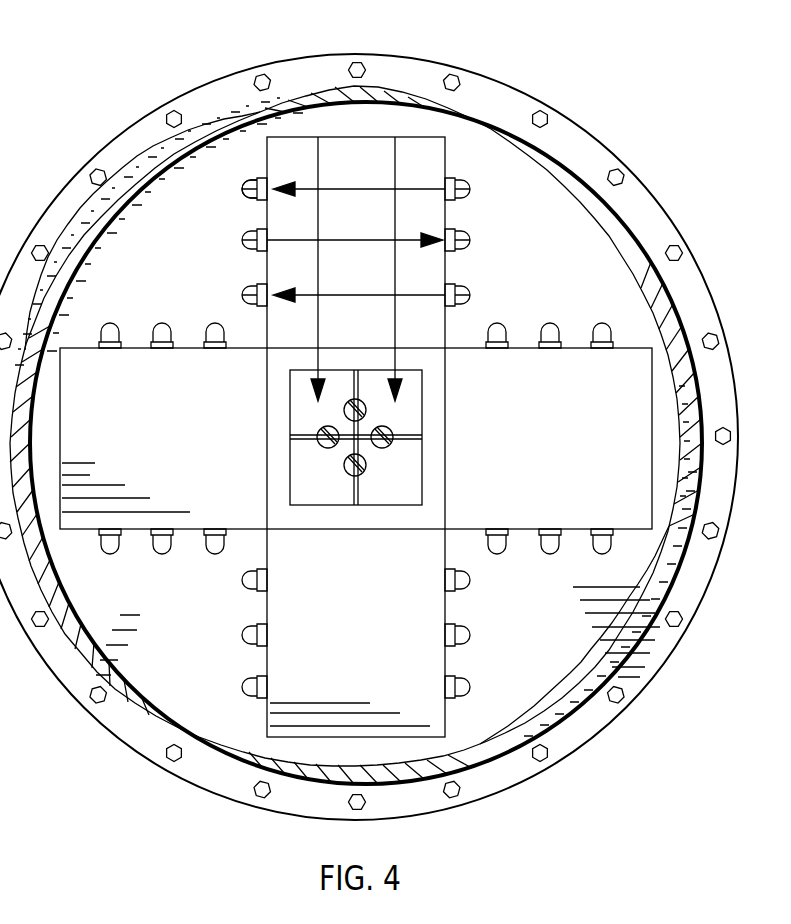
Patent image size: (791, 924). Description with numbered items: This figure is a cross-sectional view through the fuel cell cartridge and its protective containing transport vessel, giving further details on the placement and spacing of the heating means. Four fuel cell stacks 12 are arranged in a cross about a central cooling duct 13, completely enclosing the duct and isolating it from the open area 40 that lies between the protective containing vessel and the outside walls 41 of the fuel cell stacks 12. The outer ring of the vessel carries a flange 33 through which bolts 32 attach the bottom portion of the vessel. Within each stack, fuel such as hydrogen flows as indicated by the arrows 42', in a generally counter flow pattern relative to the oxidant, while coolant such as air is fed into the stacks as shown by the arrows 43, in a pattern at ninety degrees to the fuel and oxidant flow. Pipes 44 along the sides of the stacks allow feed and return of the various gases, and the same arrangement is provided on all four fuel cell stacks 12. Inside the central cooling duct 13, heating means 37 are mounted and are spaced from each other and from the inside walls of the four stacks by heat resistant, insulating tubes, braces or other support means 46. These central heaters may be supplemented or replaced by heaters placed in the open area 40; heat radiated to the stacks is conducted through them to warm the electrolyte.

The fuel cell stacks 12 is at (447, 166).
The central cooling duct 13 is at (302, 415).
The bolts 32 is at (446, 70).
The flange 33 is at (482, 68).
The heating means 37 is at (368, 408).
The open area 40 is at (168, 193).
The outside walls 41 is at (257, 178).
The arrows 42' is at (356, 244).
The arrows 43 is at (393, 146).
The pipes 44 is at (244, 240).
The support means 46 is at (317, 437).